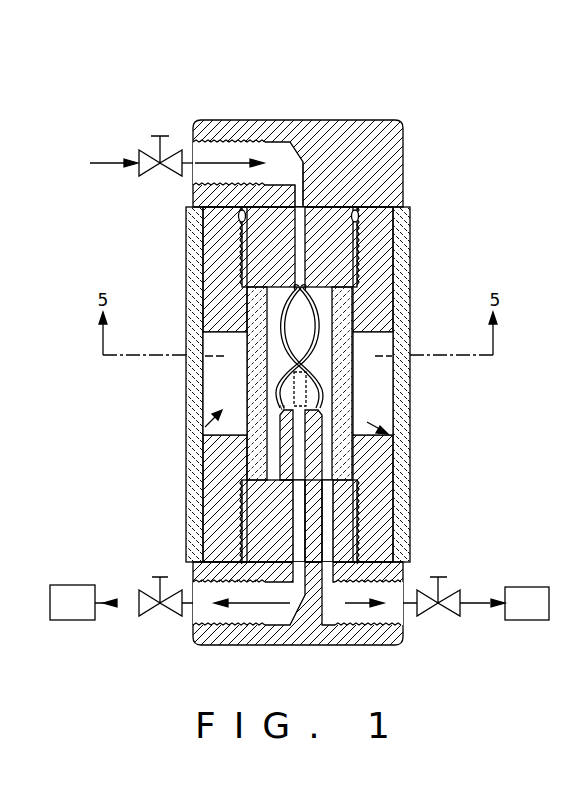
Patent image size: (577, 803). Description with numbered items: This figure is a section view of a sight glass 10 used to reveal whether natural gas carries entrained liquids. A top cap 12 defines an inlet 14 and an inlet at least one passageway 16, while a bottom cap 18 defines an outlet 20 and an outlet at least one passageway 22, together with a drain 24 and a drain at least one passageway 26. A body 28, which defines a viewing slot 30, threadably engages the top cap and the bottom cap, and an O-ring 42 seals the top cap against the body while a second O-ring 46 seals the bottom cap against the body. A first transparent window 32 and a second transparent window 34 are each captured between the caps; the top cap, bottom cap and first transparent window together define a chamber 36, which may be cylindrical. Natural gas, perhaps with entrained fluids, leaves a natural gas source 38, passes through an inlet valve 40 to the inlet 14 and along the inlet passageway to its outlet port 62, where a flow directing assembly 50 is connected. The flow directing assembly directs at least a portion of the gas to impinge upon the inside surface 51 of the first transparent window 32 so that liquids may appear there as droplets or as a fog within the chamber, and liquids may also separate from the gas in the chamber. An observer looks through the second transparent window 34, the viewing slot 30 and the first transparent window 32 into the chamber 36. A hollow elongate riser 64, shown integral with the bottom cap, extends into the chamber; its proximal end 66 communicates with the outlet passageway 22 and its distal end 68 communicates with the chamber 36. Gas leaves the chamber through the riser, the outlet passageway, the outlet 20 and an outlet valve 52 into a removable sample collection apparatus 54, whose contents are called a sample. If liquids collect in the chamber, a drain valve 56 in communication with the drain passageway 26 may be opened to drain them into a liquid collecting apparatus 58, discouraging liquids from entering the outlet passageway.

The sight glass 10 is at (155, 93).
The top cap 12 is at (403, 140).
The inlet 14 is at (228, 160).
The inlet at least one passageway 16 is at (325, 195).
The bottom cap 18 is at (290, 648).
The outlet 20 is at (215, 625).
The outlet at least one passageway 22 is at (263, 565).
The drain 24 is at (385, 625).
The drain at least one passageway 26 is at (345, 590).
The body 28 is at (210, 247).
The viewing slot 30 is at (200, 440).
The first transparent window 32 is at (245, 290).
The second transparent window 34 is at (200, 415).
The chamber 36 is at (340, 347).
The natural gas source 38 is at (88, 200).
The inlet valve 40 is at (140, 158).
The O-ring 42 is at (385, 182).
The second O-ring 46 is at (398, 540).
The flow directing assembly 50 is at (278, 345).
The inside surface 51 is at (310, 395).
The outlet valve 52 is at (140, 612).
The removable sample collection apparatus 54 is at (50, 600).
The drain valve 56 is at (445, 615).
The liquid collecting apparatus 58 is at (517, 620).
The outlet port 62 is at (289, 200).
The hollow elongate riser 64 is at (282, 467).
The proximal end 66 is at (280, 474).
The distal end 68 is at (290, 390).